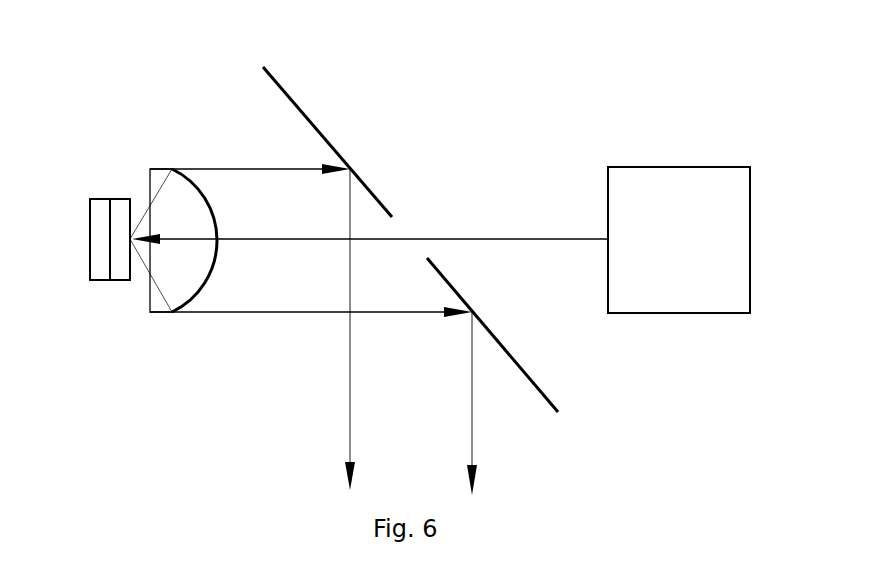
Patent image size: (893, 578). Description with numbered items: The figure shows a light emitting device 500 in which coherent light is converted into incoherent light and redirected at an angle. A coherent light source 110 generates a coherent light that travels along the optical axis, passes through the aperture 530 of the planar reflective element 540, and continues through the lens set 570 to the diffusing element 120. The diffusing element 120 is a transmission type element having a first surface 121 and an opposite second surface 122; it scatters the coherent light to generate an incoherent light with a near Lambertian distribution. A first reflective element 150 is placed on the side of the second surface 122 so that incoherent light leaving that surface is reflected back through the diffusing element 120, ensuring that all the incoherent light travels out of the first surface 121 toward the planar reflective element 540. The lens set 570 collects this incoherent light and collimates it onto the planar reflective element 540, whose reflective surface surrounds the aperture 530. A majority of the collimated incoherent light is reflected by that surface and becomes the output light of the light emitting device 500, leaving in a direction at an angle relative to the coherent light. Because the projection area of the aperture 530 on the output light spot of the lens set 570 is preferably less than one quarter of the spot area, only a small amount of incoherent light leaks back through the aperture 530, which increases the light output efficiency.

The light emitting device 500 is at (386, 281).
The coherent light source 110 is at (681, 318).
The planar reflective element 540 is at (328, 132).
The aperture 530 is at (408, 227).
The lens set 570 is at (158, 315).
The first reflective element 150 is at (100, 196).
The diffusing element 120 is at (118, 195).
The second surface 122 is at (108, 237).
The first surface 121 is at (130, 258).